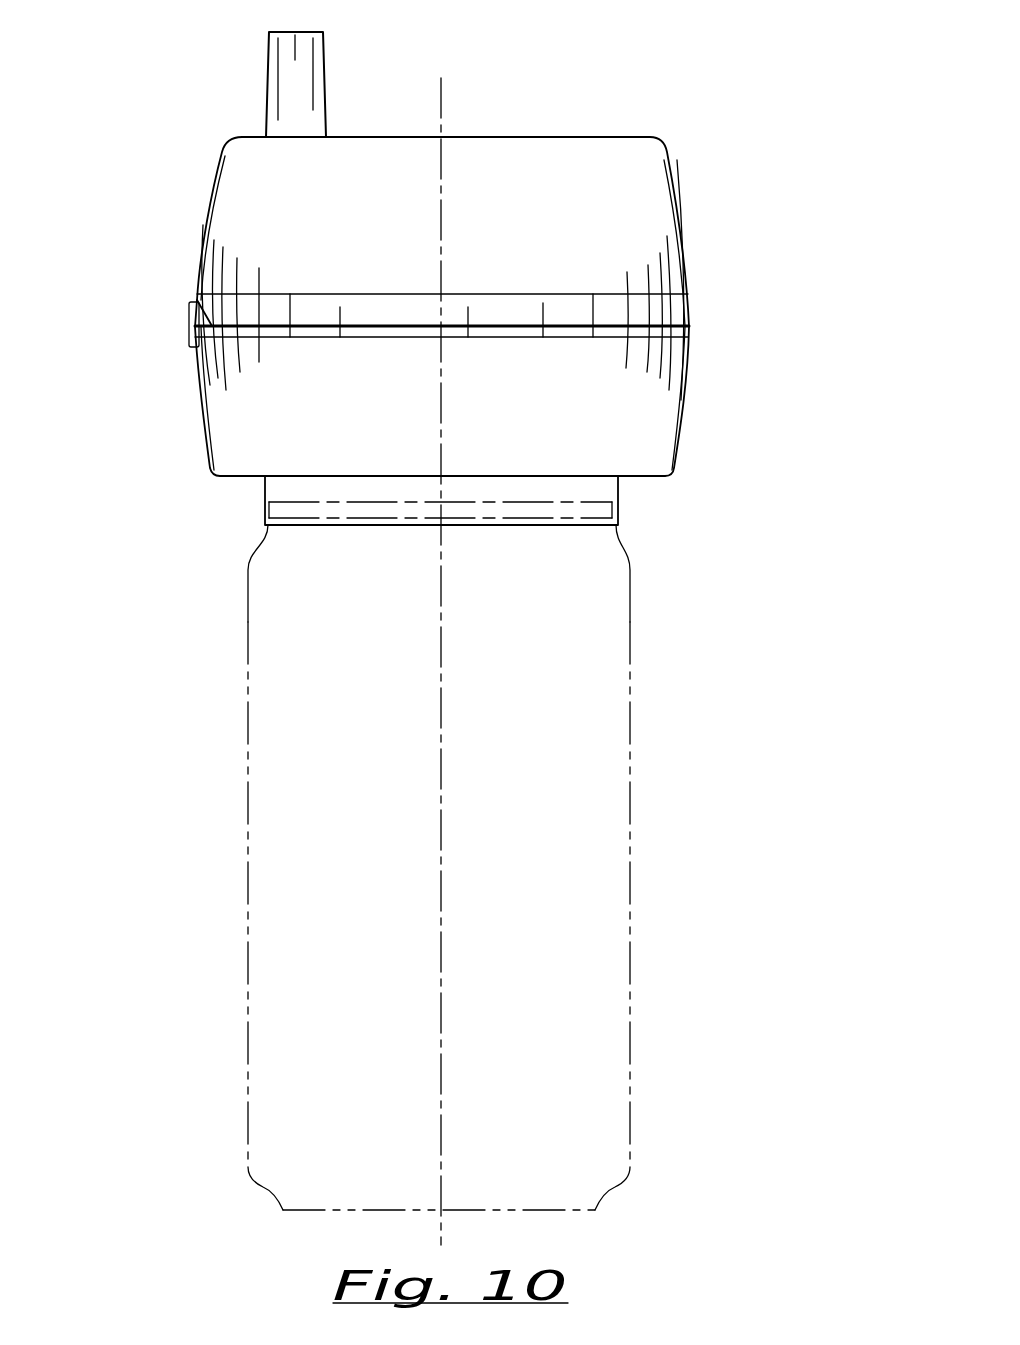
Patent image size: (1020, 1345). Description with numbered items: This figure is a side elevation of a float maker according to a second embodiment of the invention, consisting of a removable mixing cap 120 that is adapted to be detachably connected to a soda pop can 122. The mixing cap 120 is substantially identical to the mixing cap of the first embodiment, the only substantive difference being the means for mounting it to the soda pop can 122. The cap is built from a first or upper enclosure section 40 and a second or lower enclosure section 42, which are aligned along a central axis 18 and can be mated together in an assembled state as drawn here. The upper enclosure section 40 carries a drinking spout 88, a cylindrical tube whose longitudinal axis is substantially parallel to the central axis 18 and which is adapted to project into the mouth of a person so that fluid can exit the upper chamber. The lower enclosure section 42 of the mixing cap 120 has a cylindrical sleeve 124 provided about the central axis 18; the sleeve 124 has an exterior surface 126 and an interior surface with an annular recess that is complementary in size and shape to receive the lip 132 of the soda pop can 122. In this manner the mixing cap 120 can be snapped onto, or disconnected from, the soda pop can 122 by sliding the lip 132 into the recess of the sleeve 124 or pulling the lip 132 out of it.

The mixing cap 120 is at (708, 106).
The drinking spout 88 is at (328, 82).
The central axis 18 is at (443, 107).
The upper enclosure section 40 is at (677, 207).
The lower enclosure section 42 is at (683, 393).
The cylindrical sleeve 124 is at (263, 489).
The exterior surface 126 is at (610, 487).
The lip 132 is at (630, 515).
The soda pop can 122 is at (610, 789).